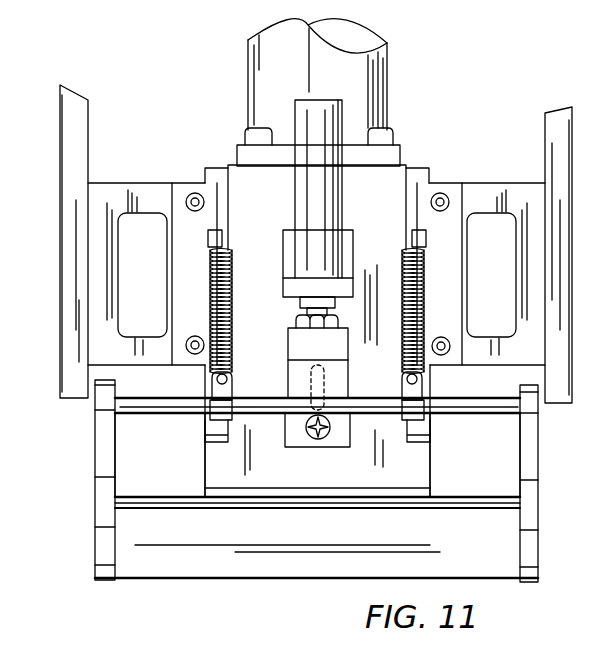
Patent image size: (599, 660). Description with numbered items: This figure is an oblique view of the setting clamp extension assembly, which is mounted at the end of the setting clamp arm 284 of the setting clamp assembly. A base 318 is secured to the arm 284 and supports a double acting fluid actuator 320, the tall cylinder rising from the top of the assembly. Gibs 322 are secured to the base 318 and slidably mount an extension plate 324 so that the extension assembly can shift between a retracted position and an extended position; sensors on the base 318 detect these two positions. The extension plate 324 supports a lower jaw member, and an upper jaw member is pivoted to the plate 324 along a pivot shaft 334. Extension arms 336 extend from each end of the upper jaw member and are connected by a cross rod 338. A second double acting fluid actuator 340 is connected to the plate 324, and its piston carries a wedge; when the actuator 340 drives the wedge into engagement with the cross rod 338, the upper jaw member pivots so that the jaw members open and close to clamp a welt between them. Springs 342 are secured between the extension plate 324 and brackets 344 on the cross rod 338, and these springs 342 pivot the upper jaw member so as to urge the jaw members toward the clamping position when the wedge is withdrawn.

The setting clamp arm 284 is at (80, 145).
The base 318 is at (133, 213).
The double acting fluid actuator 320 is at (388, 72).
The gibs 322 is at (187, 185).
The extension plate 324 is at (218, 174).
The pivot shaft 334 is at (162, 503).
The extension arms 336 is at (103, 453).
The cross rod 338 is at (490, 407).
The double acting fluid actuator 340 is at (338, 181).
The springs 342 is at (233, 293).
The brackets 344 is at (227, 390).